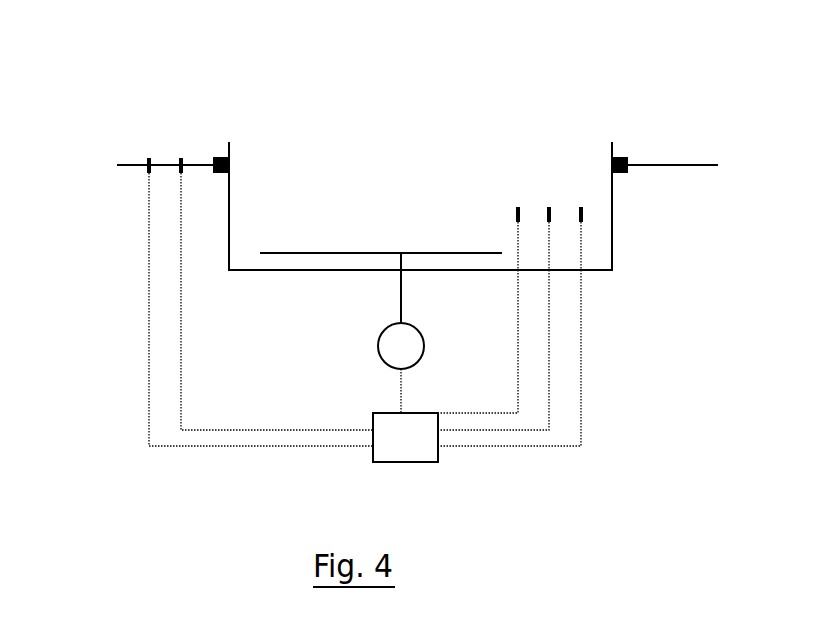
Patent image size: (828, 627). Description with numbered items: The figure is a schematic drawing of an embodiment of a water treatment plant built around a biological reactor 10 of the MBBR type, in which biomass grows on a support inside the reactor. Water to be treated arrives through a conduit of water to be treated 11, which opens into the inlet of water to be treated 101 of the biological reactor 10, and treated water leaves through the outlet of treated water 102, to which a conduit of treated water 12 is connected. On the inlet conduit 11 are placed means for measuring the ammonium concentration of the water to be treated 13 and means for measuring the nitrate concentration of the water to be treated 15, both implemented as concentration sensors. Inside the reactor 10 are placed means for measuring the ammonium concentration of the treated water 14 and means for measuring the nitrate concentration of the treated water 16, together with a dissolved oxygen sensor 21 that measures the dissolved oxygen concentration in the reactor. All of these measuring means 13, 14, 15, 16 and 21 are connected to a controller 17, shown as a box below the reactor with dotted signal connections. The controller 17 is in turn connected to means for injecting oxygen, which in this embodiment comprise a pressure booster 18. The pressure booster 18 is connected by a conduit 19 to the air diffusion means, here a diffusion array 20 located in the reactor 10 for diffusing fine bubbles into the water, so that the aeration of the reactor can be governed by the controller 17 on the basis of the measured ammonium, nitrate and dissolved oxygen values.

The biological reactor 10 is at (293, 190).
The conduit of water to be treated 11 is at (128, 164).
The conduit of treated water 12 is at (712, 165).
The means for measuring ammonium concentration of the water to be treated 13 is at (147, 162).
The means for measuring ammonium concentration of the treated water 14 is at (548, 207).
The means for measuring nitrate concentration of the water to be treated 15 is at (180, 162).
The means for measuring nitrate concentration of the treated water 16 is at (582, 207).
The controller 17 is at (406, 445).
The pressure booster 18 is at (390, 349).
The conduit 19 is at (400, 301).
The diffusion array 20 is at (437, 253).
The dissolved oxygen sensor 21 is at (513, 215).
The inlet of water to be treated 101 is at (214, 157).
The outlet of treated water 102 is at (615, 158).